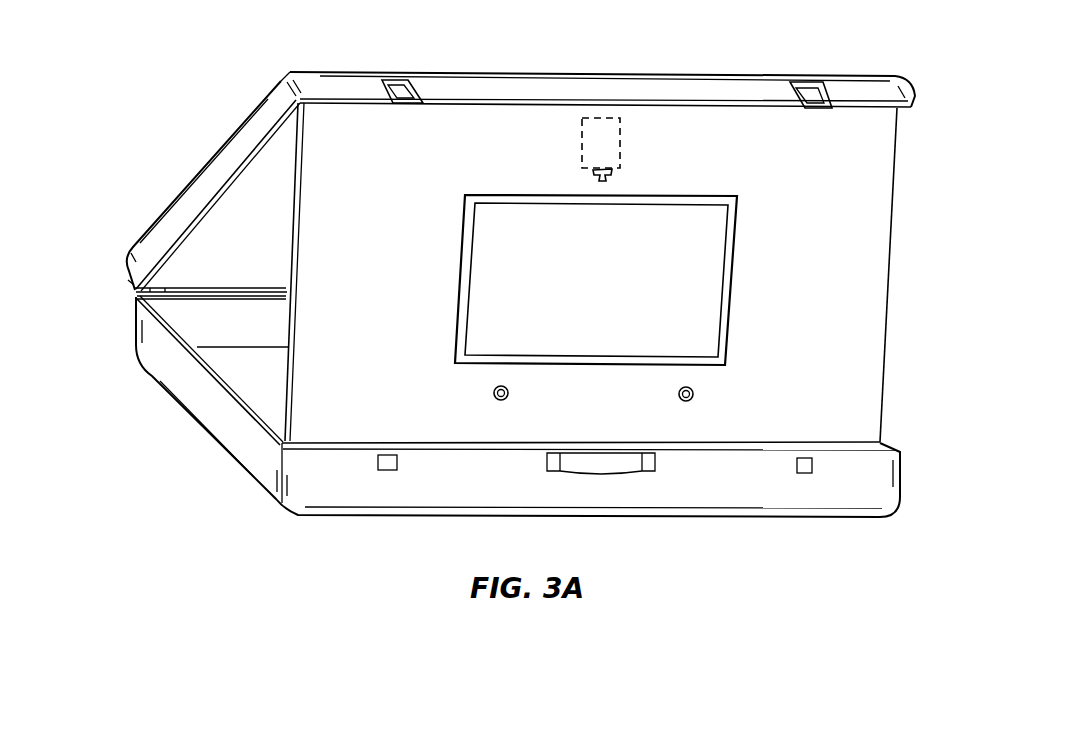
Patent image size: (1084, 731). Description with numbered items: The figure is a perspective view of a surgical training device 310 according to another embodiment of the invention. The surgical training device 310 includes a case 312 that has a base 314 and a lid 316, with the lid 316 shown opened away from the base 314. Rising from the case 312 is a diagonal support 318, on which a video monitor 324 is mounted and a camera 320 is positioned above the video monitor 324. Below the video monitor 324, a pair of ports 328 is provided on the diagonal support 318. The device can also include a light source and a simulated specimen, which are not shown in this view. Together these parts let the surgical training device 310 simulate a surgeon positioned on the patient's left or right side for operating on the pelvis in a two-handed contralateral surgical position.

The surgical training device 310 is at (836, 59).
The case 312 is at (119, 318).
The base 314 is at (189, 397).
The lid 316 is at (228, 157).
The diagonal support 318 is at (313, 405).
The camera 320 is at (621, 143).
The video monitor 324 is at (730, 287).
The ports 328 is at (491, 396).